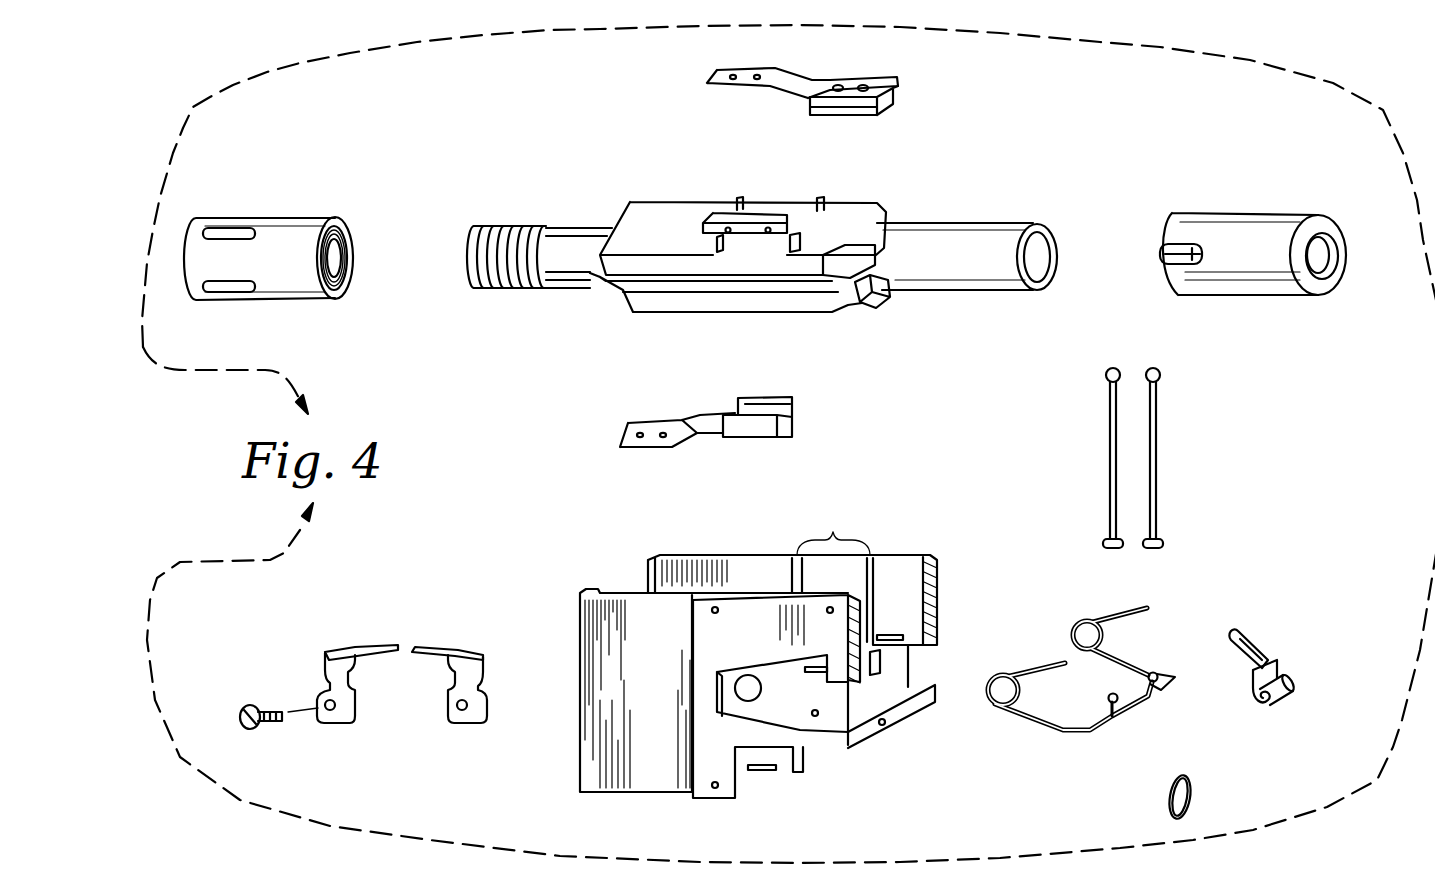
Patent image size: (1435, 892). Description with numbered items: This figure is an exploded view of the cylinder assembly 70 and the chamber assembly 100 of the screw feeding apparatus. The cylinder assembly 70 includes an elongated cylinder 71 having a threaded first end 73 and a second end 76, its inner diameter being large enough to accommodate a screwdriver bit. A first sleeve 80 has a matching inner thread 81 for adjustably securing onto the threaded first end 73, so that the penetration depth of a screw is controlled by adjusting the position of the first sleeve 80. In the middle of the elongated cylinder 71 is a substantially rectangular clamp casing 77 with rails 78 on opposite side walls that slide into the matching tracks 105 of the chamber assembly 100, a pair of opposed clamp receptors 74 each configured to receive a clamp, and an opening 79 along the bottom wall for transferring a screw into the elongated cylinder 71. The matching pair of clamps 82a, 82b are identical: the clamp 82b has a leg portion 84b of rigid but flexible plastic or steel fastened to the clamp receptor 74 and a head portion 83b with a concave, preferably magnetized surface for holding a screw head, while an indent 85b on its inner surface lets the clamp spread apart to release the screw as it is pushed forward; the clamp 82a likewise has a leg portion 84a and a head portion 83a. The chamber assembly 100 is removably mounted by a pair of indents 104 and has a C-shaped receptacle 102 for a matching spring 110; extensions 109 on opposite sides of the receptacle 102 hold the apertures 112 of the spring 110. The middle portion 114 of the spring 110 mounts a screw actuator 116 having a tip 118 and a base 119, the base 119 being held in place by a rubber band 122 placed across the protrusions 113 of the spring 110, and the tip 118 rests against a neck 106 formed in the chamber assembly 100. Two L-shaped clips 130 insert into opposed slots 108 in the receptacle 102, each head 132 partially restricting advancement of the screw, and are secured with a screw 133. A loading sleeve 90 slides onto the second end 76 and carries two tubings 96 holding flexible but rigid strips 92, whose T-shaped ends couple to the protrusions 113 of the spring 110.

The cylinder assembly 70 is at (762, 245).
The elongated cylinder 71 is at (566, 288).
The threaded first end 73 is at (510, 228).
The clamp receptor 74 is at (751, 209).
The second end 76 is at (950, 275).
The clamp casing 77 is at (660, 207).
The rails 78 is at (793, 254).
The opening 79 is at (868, 285).
The first sleeve 80 is at (292, 218).
The inner thread 81 is at (336, 252).
The clamp 82a is at (819, 106).
The clamp 82b is at (745, 458).
The head portion 83a is at (850, 114).
The head portion 83b is at (768, 440).
The leg portion 84a is at (745, 72).
The leg portion 84b is at (648, 455).
The indent 85b is at (794, 405).
The loading sleeve 90 is at (1230, 235).
The strips 92 is at (1158, 428).
The tubings 96 is at (1160, 252).
The chamber assembly 100 is at (745, 675).
The C-shaped receptacle 102 is at (793, 705).
The indents 104 is at (760, 775).
The tracks 105 is at (833, 526).
The neck 106 is at (882, 668).
The slots 108 is at (898, 641).
The extensions 109 is at (748, 684).
The spring 110 is at (1096, 714).
The apertures 112 is at (1083, 638).
The protrusions 113 is at (1117, 695).
The middle portion 114 is at (1155, 690).
The screw actuator 116 is at (1309, 642).
The tip 118 is at (1236, 634).
The base 119 is at (1297, 685).
The rubber band 122 is at (1193, 797).
The L-shaped clip 130 is at (363, 701).
The head 132 is at (378, 645).
The screw 133 is at (265, 700).